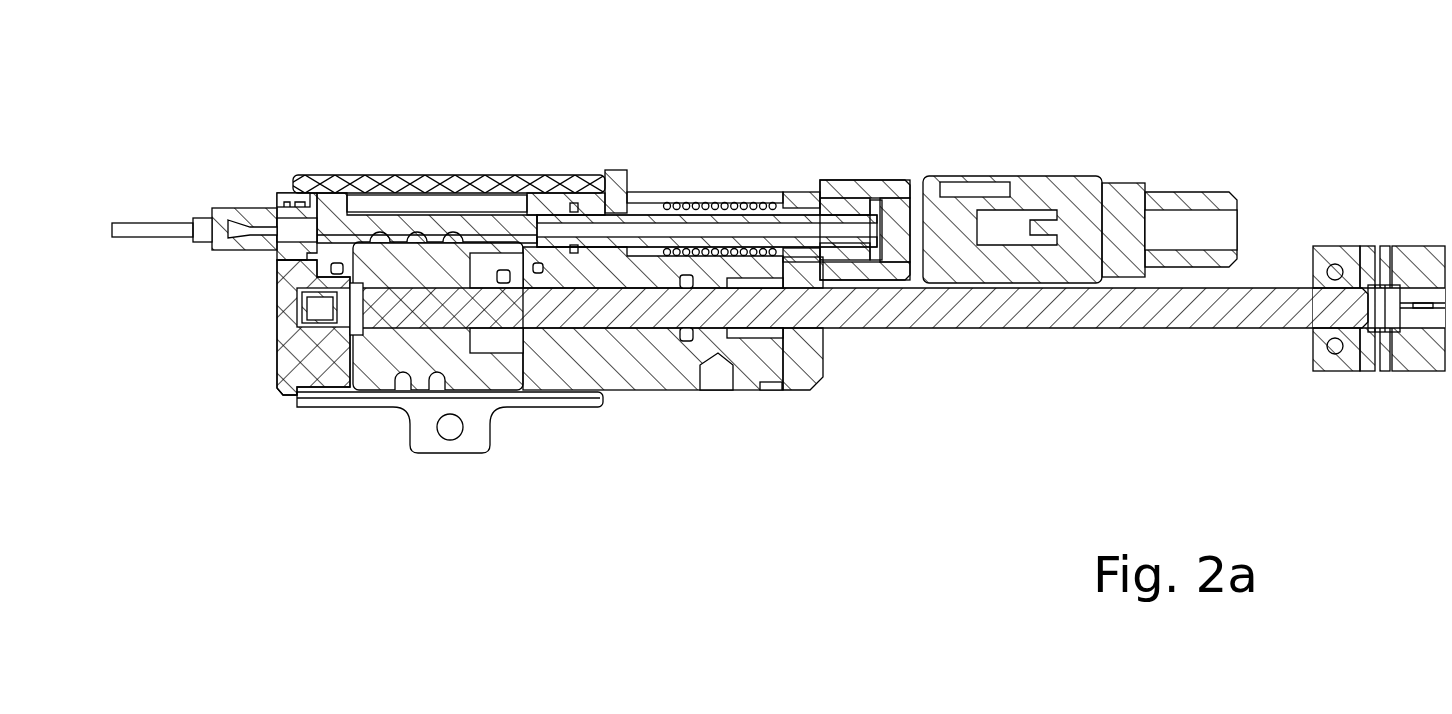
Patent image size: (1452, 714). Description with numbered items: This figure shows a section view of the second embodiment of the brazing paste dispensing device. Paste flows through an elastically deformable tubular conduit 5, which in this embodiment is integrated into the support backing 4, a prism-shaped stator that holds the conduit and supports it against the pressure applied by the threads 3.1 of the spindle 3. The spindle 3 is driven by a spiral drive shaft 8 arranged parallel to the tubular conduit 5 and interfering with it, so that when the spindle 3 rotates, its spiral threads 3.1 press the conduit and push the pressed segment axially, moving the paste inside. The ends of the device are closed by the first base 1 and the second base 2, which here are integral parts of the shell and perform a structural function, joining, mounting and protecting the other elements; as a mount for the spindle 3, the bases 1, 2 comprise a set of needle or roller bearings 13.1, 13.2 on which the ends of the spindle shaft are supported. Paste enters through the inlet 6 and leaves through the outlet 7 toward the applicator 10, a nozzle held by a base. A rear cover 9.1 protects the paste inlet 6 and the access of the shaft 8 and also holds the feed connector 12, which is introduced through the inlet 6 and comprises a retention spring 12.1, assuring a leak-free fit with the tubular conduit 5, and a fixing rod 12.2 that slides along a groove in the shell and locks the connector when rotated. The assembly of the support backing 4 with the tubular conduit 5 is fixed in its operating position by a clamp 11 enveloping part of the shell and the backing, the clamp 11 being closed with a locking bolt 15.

The first base 1 is at (650, 370).
The second base 2 is at (297, 405).
The spindle 3 is at (375, 360).
The threads 3.1 is at (450, 378).
The support backing 4 is at (533, 207).
The tubular conduit 5 is at (335, 217).
The inlet 6 is at (540, 225).
The outlet 7 is at (313, 225).
The drive shaft 8 is at (952, 312).
The rear cover 9.1 is at (805, 360).
The applicator 10 is at (178, 230).
The clamp 11 is at (423, 430).
The feed connector 12 is at (1067, 208).
The retention spring 12.1 is at (745, 203).
The fixing rod 12.2 is at (615, 176).
The needle or roller bearing 13.1 is at (750, 337).
The needle or roller bearing 13.2 is at (275, 368).
The locking bolt 15 is at (448, 440).